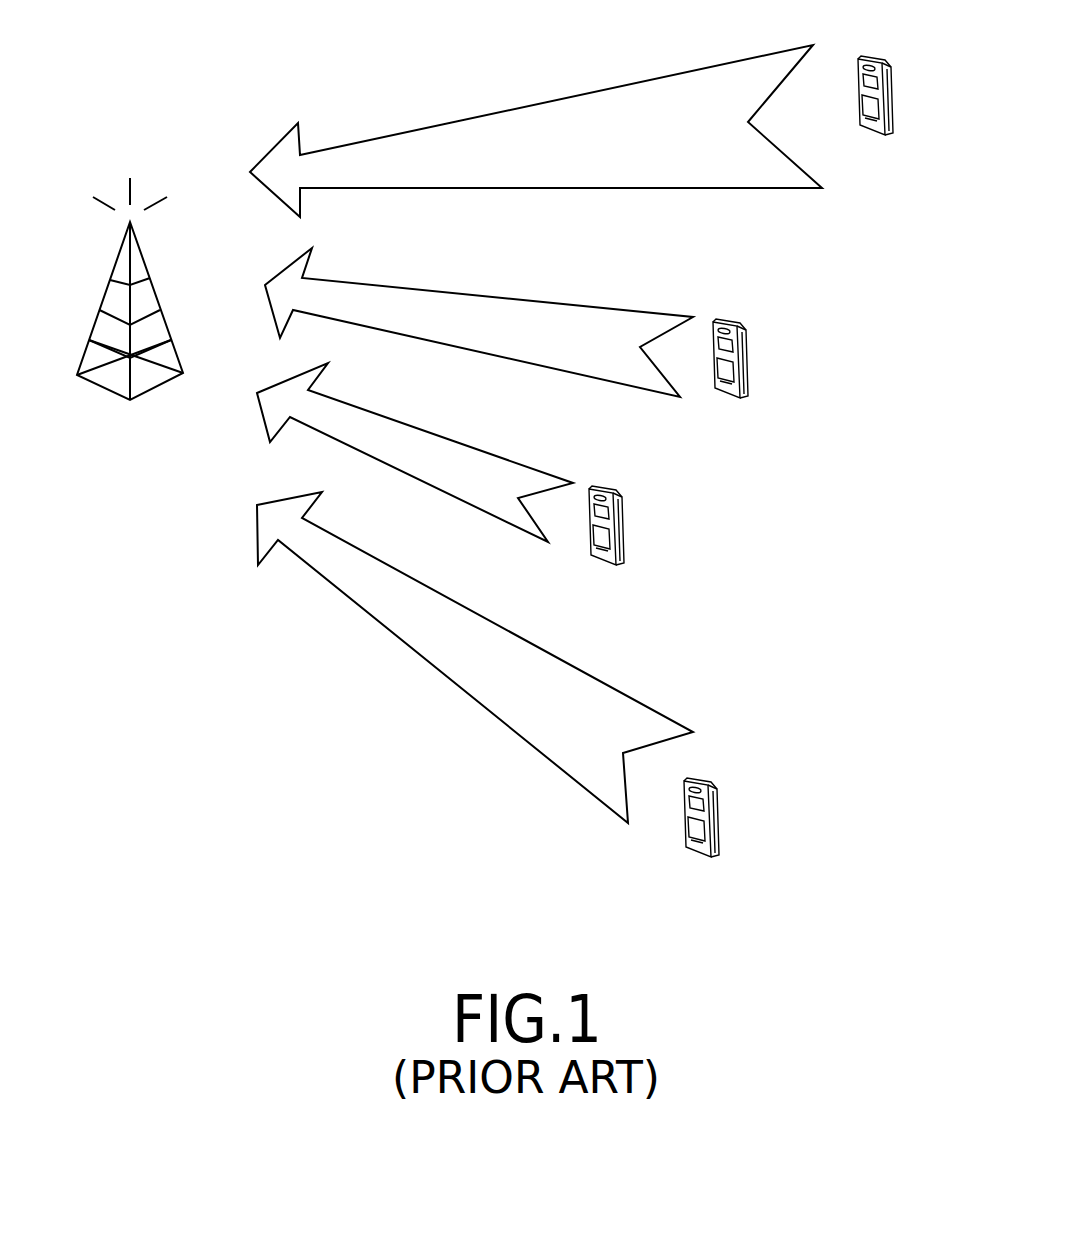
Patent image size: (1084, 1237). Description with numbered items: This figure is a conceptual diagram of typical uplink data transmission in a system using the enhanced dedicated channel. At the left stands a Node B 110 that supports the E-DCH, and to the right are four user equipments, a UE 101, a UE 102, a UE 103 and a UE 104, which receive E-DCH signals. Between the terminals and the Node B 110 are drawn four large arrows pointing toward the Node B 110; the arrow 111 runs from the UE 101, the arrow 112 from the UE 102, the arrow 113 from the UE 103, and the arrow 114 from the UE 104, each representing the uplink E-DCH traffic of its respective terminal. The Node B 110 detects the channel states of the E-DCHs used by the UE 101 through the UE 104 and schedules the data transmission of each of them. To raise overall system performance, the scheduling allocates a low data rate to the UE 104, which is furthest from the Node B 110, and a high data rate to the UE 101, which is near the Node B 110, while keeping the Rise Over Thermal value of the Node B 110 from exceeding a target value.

The Node B 110 is at (133, 157).
The UE 101 is at (608, 485).
The UE 102 is at (732, 318).
The UE 103 is at (703, 778).
The UE 104 is at (877, 55).
The uplink channel from UE 101 111 is at (440, 440).
The uplink channel from UE 102 112 is at (488, 300).
The uplink channel from UE 103 113 is at (477, 617).
The uplink channel from UE 104 114 is at (510, 98).